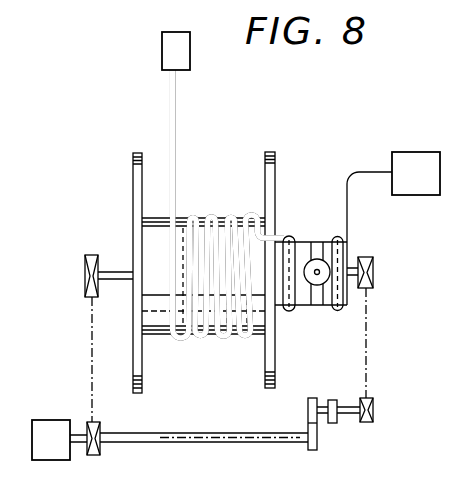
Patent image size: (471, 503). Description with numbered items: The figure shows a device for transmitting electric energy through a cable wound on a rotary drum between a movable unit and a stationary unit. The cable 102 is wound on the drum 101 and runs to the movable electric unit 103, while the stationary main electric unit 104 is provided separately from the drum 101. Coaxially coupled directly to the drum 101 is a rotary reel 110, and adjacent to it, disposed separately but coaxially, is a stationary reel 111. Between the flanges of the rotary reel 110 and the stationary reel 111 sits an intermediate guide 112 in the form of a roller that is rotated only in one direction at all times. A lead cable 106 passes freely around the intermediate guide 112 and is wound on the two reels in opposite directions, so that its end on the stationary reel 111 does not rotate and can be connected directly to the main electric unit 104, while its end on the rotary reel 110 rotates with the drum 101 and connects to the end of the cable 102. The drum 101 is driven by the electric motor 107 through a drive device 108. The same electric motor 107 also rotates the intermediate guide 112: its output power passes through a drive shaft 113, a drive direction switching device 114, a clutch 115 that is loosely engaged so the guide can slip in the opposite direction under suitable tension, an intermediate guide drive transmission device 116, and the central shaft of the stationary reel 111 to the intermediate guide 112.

The drum 101 is at (125, 226).
The cable 102 is at (176, 125).
The movable electric unit 103 is at (186, 57).
The main electric unit 104 is at (418, 157).
The lead cable 106 is at (367, 170).
The electric motor 107 is at (57, 418).
The drive device 108 is at (86, 342).
The rotary reel 110 is at (302, 307).
The stationary reel 111 is at (338, 307).
The intermediate guide 112 is at (315, 256).
The drive shaft 113 is at (160, 444).
The drive direction switching device 114 is at (307, 450).
The clutch 115 is at (340, 424).
The intermediate guide drive transmission device 116 is at (372, 364).